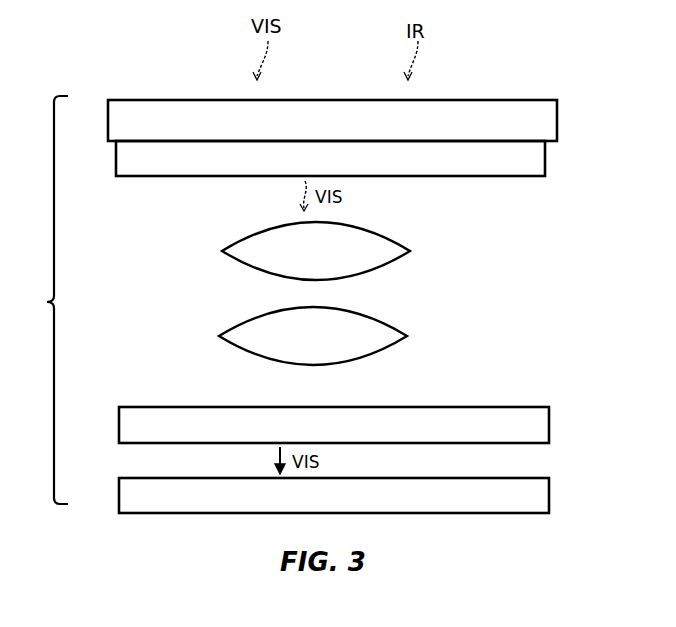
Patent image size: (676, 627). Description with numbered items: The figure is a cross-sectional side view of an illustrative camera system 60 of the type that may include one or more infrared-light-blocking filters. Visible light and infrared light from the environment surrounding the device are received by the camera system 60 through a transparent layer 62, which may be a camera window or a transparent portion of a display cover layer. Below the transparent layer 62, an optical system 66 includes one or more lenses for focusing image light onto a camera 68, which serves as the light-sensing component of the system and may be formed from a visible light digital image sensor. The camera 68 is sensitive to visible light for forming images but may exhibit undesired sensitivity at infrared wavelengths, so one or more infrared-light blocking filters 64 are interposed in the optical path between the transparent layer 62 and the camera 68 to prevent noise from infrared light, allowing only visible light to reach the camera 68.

The camera system 60 is at (42, 300).
The transparent layer 62 is at (543, 118).
The infrared-light blocking filter 64 is at (537, 160).
The optical system 66 is at (433, 372).
The camera 68 is at (541, 496).